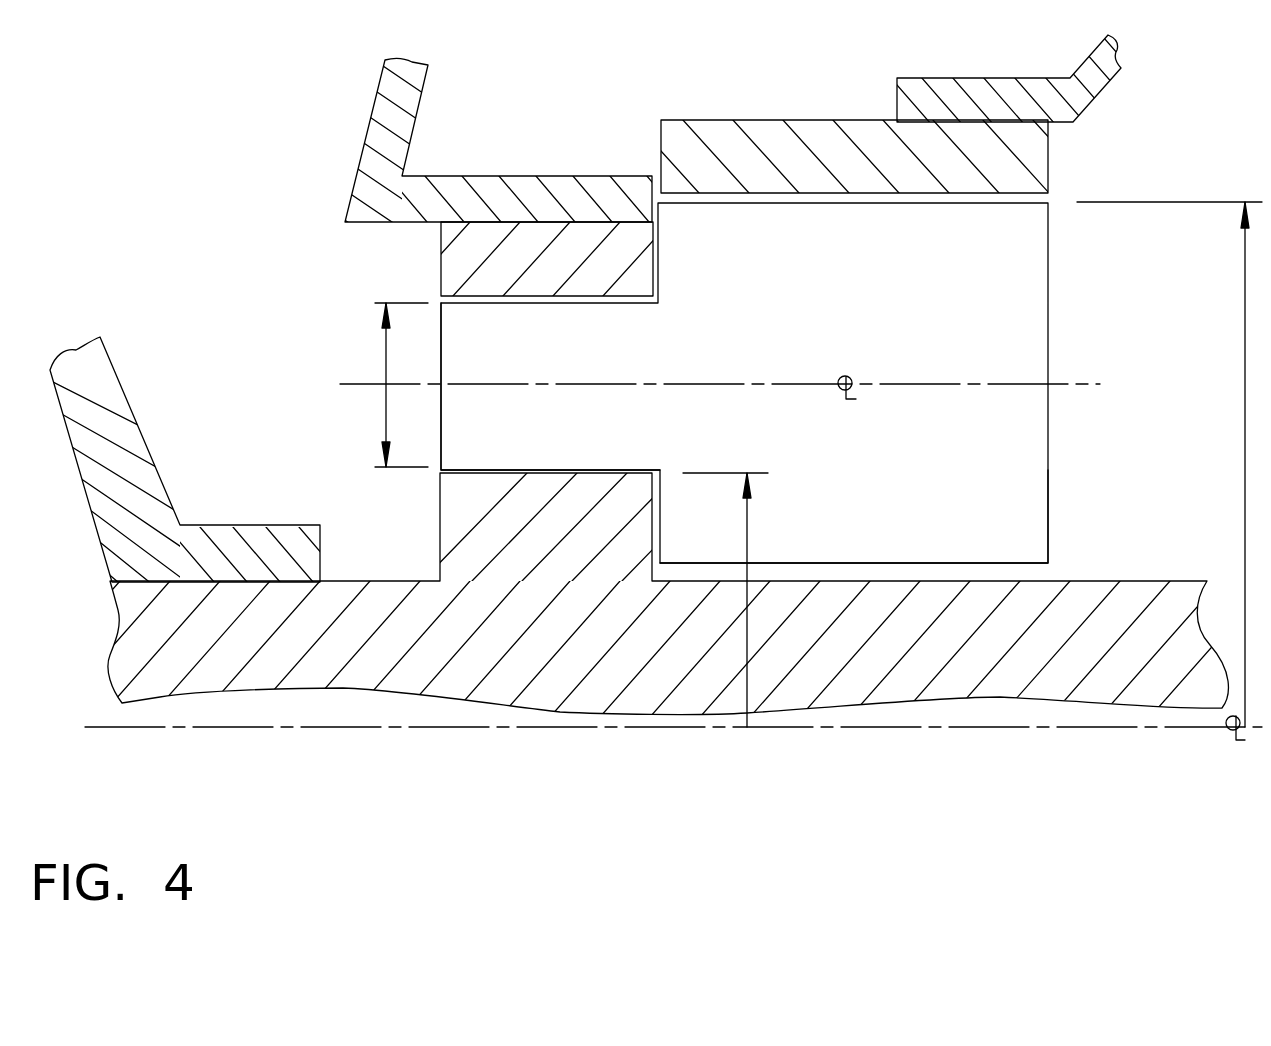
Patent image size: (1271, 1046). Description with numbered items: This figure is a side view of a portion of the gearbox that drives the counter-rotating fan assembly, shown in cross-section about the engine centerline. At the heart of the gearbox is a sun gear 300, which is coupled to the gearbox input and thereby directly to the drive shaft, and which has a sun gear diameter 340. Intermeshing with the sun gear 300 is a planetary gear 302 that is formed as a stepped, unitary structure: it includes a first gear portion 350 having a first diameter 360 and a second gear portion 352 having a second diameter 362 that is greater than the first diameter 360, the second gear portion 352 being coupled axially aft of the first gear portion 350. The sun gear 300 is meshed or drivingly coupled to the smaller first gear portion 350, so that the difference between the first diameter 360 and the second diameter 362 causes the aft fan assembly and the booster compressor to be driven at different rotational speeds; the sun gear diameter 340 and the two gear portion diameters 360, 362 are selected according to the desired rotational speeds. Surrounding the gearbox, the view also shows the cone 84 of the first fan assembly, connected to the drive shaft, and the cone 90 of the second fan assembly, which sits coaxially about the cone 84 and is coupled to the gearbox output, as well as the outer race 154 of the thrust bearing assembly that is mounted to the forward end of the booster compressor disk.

The cone 84 is at (140, 423).
The cone 90 is at (375, 115).
The outer race 154 is at (1086, 76).
The sun gear 300 is at (477, 550).
The planetary gear 302 is at (1003, 265).
The diameter 340 is at (747, 533).
The first gear portion 350 is at (463, 442).
The second gear portion 352 is at (1018, 517).
The first diameter 360 is at (384, 410).
The second diameter 362 is at (1245, 400).